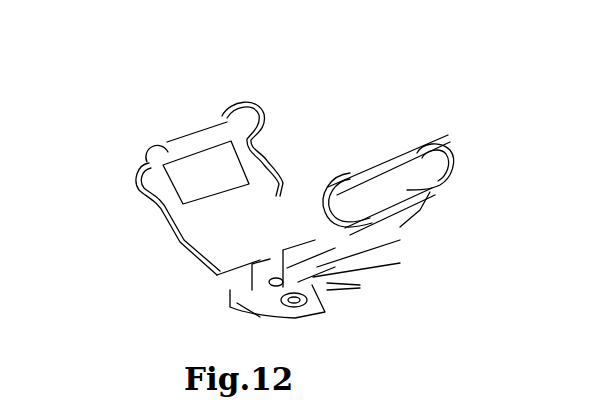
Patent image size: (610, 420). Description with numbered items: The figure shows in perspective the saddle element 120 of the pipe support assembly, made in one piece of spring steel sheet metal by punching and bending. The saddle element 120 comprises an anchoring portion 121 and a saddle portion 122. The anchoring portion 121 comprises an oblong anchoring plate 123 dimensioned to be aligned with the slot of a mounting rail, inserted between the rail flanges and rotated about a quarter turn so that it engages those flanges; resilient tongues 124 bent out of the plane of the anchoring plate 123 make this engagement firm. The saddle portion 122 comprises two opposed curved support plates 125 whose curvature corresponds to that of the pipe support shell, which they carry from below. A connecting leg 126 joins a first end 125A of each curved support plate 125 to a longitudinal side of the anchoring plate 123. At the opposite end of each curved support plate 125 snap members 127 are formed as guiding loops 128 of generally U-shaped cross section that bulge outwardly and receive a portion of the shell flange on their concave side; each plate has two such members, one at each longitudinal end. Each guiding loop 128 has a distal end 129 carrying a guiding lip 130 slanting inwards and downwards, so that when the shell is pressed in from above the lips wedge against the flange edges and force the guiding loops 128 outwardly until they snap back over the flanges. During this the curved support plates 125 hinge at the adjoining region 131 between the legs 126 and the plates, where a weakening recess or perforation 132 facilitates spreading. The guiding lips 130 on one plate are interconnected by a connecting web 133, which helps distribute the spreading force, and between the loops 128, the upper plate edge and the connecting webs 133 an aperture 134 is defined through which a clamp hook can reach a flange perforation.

The saddle element 120 is at (475, 114).
The anchoring portion 121 is at (388, 290).
The saddle portion 122 is at (308, 181).
The anchoring plate 123 is at (212, 308).
The resilient tongues 124 is at (380, 291).
The curved support plates 125 is at (288, 156).
The first end 125A is at (245, 282).
The connecting leg 126 is at (210, 293).
The snap members 127 is at (131, 149).
The guiding loops 128 is at (138, 182).
The distal end 129 is at (168, 148).
The guiding lip 130 is at (145, 140).
The adjoining region 131 is at (253, 260).
The weakening recess or perforation 132 is at (272, 240).
The connecting web 133 is at (200, 138).
The aperture 134 is at (218, 158).